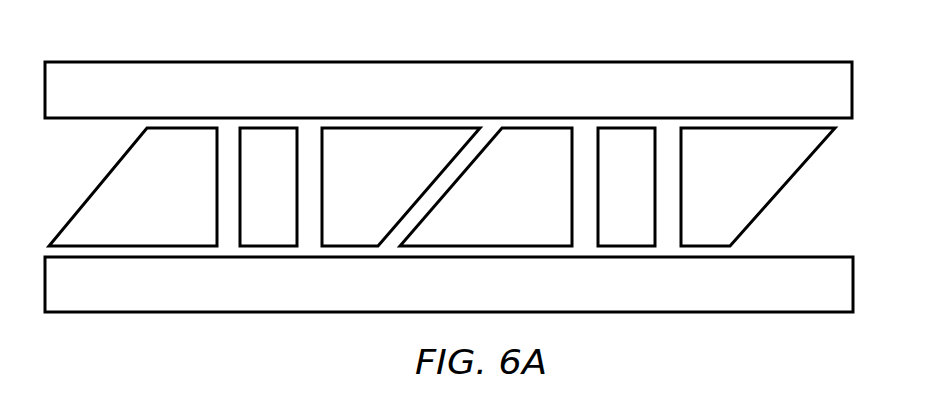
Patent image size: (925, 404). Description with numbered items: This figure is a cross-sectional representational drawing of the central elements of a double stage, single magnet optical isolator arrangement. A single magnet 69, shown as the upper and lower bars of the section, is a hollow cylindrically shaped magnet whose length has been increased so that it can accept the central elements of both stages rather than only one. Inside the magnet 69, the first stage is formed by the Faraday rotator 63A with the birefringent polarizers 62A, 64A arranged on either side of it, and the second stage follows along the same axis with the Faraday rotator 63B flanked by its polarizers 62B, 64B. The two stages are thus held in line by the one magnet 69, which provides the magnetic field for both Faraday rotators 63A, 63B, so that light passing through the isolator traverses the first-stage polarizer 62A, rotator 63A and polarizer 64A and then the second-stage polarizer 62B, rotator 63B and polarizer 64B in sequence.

The magnet 69 is at (449, 189).
The polarizer 62A is at (122, 187).
The Faraday rotator 63A is at (251, 137).
The polarizer 64A is at (388, 136).
The polarizer 62B is at (507, 132).
The Faraday rotator 63B is at (648, 132).
The polarizer 64B is at (759, 132).